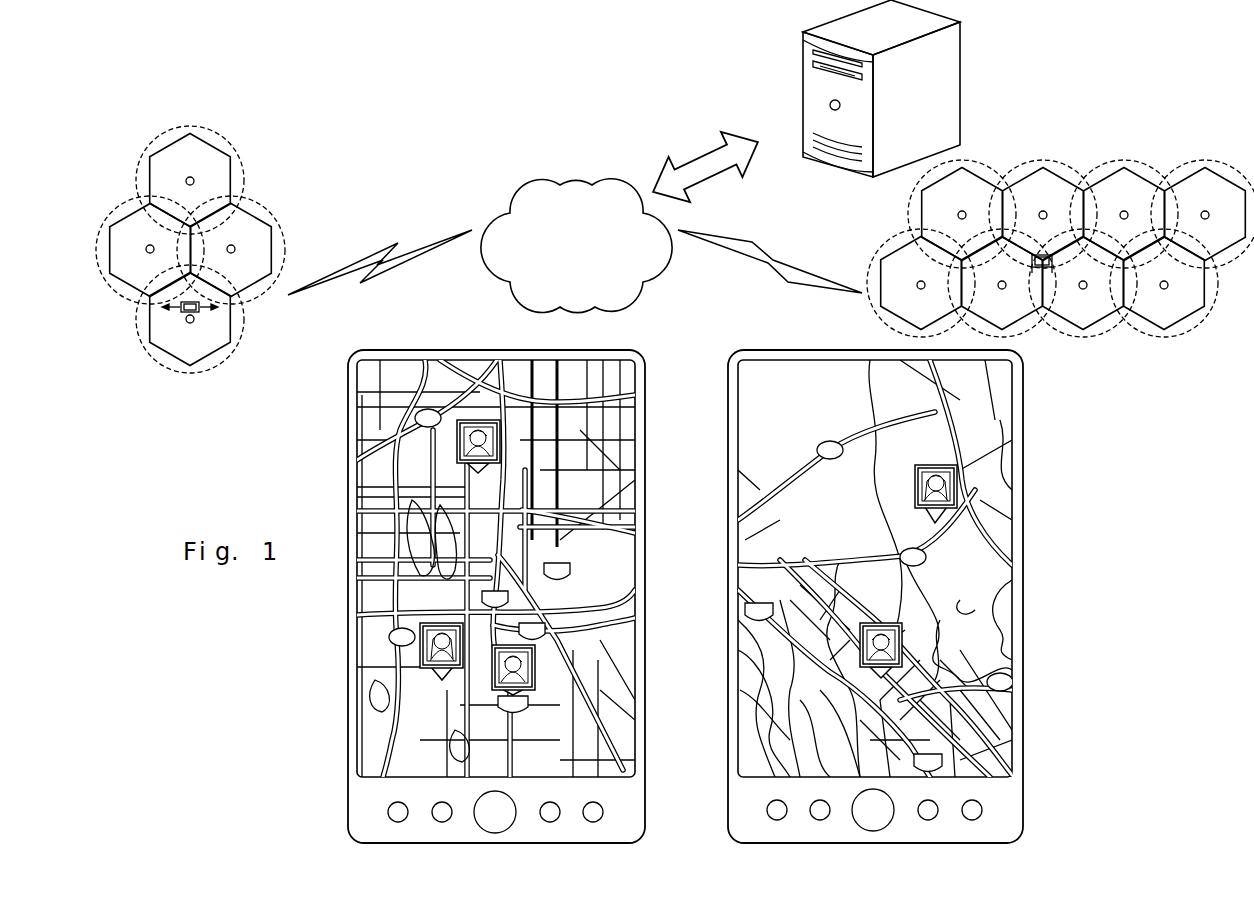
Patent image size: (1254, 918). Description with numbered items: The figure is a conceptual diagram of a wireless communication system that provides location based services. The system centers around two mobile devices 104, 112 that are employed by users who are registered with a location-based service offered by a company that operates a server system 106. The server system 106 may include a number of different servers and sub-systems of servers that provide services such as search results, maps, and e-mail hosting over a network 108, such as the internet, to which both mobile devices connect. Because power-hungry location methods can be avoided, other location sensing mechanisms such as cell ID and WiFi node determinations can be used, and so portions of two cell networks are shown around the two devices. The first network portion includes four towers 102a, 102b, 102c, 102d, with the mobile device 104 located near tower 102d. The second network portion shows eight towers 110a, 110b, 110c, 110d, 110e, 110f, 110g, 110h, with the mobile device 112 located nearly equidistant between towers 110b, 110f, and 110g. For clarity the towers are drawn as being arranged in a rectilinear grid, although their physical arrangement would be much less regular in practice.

The tower 102a is at (190, 180).
The tower 102b is at (141, 229).
The tower 102c is at (270, 250).
The tower 102d is at (190, 319).
The mobile device 104 is at (203, 310).
The server system 106 is at (962, 72).
The network 108 is at (537, 185).
The tower 110a is at (962, 214).
The tower 110b is at (1043, 214).
The tower 110c is at (1124, 214).
The tower 110d is at (1202, 214).
The tower 110e is at (921, 283).
The tower 110f is at (1002, 283).
The tower 110g is at (1083, 283).
The tower 110h is at (1164, 283).
The mobile device 112 is at (1042, 268).